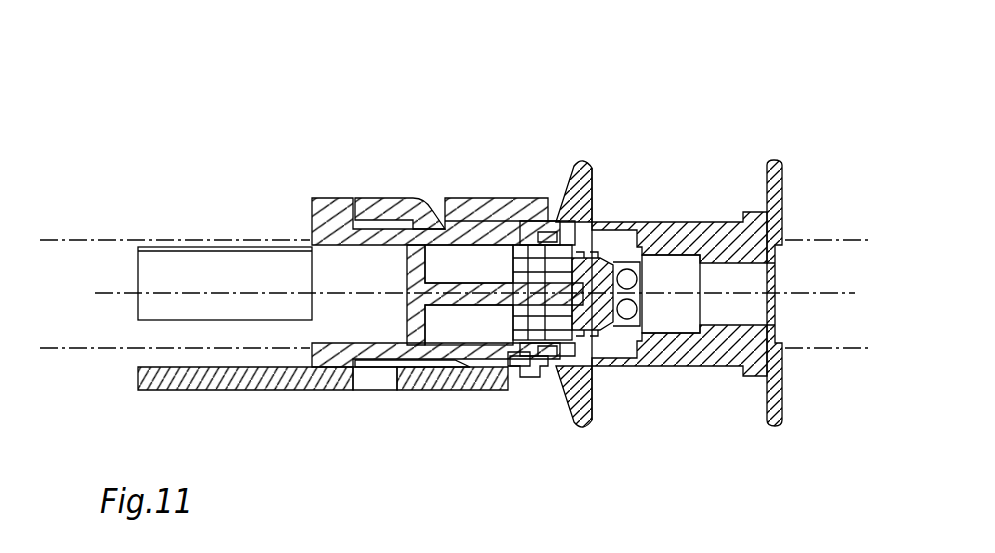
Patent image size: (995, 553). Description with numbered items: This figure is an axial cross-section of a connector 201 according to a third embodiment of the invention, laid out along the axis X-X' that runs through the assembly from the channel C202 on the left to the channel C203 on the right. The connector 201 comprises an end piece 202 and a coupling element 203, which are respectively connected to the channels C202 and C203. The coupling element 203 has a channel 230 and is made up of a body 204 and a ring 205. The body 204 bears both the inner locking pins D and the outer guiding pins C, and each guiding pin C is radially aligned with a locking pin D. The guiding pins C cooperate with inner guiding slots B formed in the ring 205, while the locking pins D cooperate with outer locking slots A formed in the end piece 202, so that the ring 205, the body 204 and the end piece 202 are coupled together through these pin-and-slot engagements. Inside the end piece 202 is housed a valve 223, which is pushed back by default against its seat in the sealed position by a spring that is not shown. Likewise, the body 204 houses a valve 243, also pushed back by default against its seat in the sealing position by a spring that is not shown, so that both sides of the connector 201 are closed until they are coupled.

The connector 201 is at (368, 130).
The end piece 202 is at (323, 203).
The coupling element 203 is at (690, 70).
The body 204 is at (775, 163).
The ring 205 is at (583, 163).
The valve 223 is at (530, 262).
The valve 243 is at (640, 252).
The channel 230 is at (671, 294).
The outer locking slots A is at (548, 230).
The inner guiding slots B is at (432, 200).
The outer guiding pins C is at (534, 368).
The inner locking pins D is at (506, 356).
The channel C202 is at (58, 240).
The channel C203 is at (830, 240).
The axis X is at (81, 294).
The axis X' is at (863, 294).